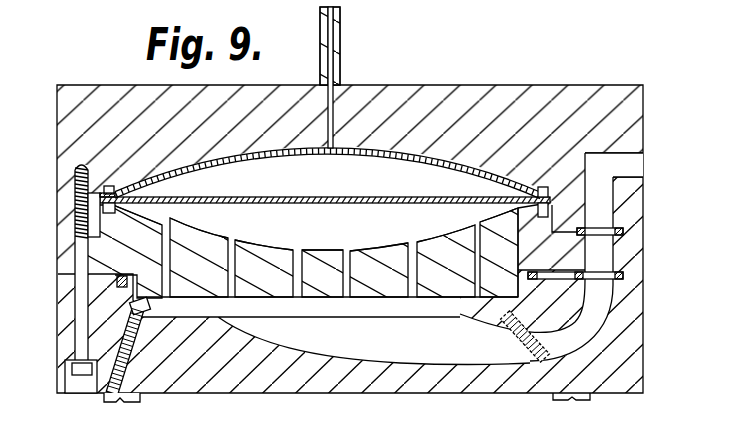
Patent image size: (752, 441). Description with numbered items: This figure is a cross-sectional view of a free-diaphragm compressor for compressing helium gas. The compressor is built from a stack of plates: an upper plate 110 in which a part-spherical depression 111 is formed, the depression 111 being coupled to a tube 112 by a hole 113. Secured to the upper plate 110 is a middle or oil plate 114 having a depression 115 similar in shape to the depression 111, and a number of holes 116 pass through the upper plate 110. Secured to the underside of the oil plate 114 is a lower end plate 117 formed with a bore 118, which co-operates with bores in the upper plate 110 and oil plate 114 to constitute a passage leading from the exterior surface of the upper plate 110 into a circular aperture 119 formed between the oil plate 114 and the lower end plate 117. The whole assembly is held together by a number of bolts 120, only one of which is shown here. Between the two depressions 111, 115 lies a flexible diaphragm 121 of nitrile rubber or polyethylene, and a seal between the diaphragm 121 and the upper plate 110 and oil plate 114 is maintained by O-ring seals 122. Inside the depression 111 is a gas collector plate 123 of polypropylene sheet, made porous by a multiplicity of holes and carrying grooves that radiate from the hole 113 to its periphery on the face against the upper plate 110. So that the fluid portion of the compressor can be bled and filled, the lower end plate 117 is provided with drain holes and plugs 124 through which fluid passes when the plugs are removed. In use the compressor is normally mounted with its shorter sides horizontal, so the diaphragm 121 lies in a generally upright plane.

The upper plate 110 is at (158, 118).
The depression 111 is at (247, 175).
The tube 112 is at (340, 35).
The hole 113 is at (336, 82).
The middle or oil plate 114 is at (137, 240).
The depression 115 is at (336, 225).
The holes 116 is at (295, 298).
The lower end plate 117 is at (173, 370).
The bore 118 is at (598, 198).
The circular aperture 119 is at (325, 310).
The bolts 120 is at (82, 342).
The flexible diaphragm 121 is at (393, 197).
The O-ring seals 122 is at (110, 186).
The gas collector plate 123 is at (143, 182).
The drain holes and plugs 124 is at (100, 395).